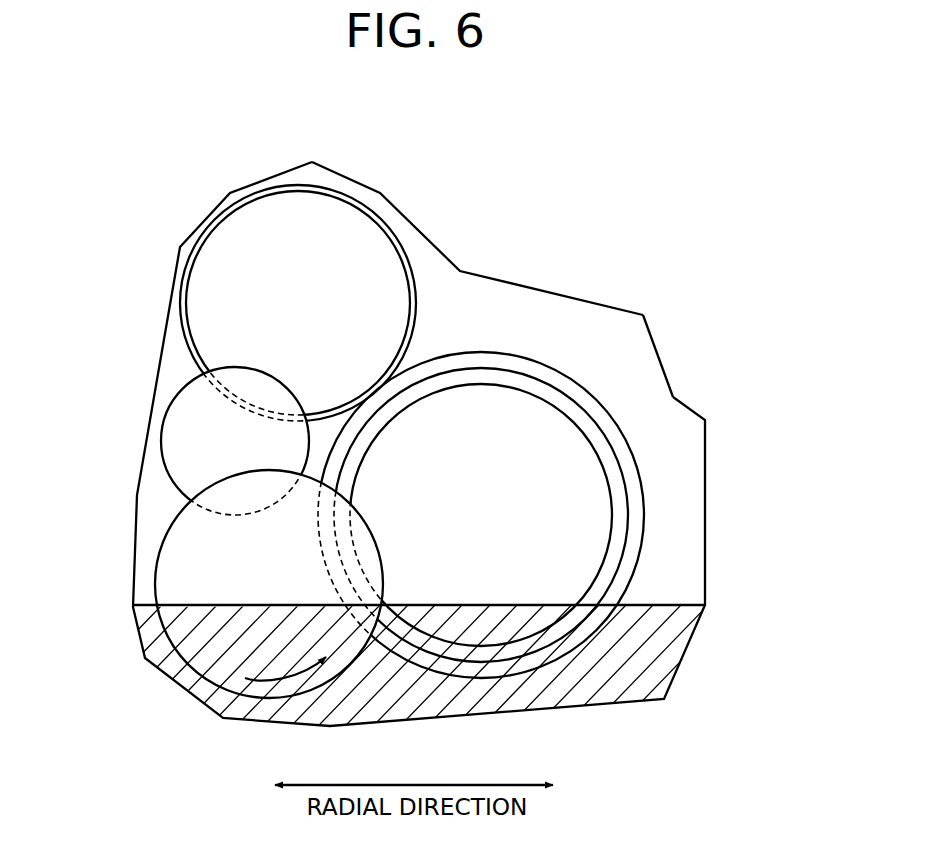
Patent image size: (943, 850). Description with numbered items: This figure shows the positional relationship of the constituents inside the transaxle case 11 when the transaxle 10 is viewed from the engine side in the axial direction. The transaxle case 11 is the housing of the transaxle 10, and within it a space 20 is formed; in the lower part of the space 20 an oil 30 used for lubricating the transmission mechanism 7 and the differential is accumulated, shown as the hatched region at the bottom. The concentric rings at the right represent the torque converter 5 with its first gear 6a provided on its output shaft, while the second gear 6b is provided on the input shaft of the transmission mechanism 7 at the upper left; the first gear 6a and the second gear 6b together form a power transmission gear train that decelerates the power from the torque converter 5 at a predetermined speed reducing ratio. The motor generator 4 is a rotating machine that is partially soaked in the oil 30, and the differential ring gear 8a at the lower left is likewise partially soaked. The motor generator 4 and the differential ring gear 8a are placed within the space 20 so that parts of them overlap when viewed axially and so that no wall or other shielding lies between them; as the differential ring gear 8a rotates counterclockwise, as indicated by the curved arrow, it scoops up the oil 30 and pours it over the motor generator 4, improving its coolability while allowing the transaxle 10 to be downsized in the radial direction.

The transaxle 10 is at (622, 254).
The transaxle case 11 is at (653, 341).
The oil 30 is at (687, 604).
The transmission mechanism 7 is at (389, 230).
The second gear 6b is at (412, 276).
The space 20 is at (569, 515).
The first gear 6a is at (641, 470).
The torque converter 5 is at (630, 510).
The motor generator 4 is at (630, 548).
The differential ring gear 8a is at (155, 567).